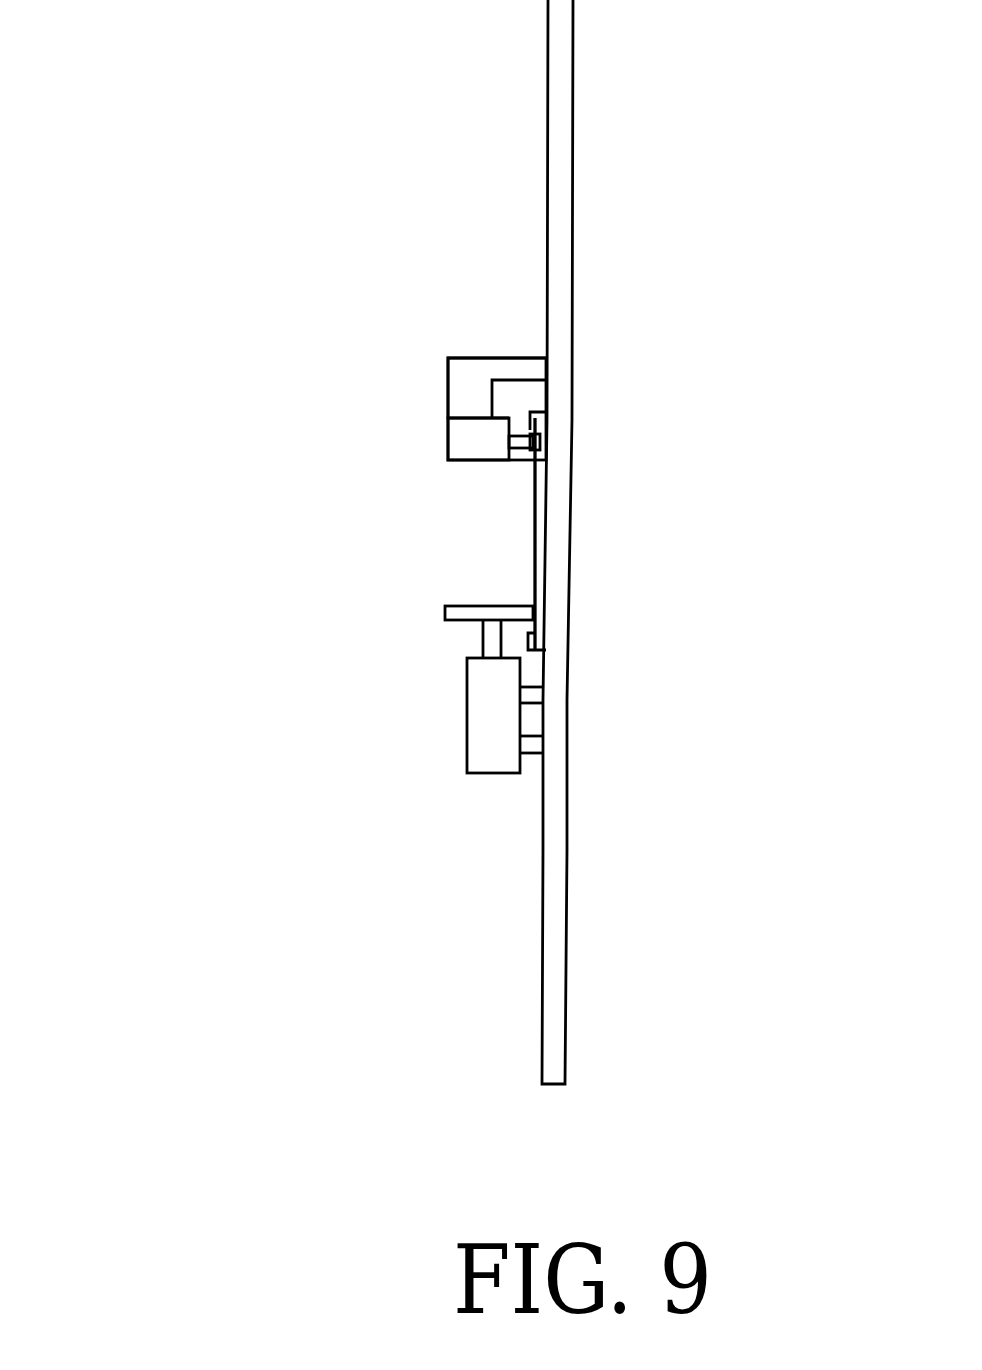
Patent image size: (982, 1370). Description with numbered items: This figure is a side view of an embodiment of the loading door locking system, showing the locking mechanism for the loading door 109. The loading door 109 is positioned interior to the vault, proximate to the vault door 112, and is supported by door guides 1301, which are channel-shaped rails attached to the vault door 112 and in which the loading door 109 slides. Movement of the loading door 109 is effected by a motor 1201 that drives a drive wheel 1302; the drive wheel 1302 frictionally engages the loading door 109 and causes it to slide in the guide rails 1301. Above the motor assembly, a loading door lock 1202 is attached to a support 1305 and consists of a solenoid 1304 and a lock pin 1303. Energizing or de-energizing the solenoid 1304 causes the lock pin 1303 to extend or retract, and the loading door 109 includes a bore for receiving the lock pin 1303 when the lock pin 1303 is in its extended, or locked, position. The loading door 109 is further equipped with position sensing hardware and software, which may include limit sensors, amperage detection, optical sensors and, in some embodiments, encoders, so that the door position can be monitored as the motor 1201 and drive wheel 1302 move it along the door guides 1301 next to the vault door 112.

The loading door 109 is at (540, 507).
The vault door 112 is at (563, 563).
The motor 1201 is at (478, 688).
The loading door lock 1202 is at (447, 402).
The door guides 1301 is at (653, 643).
The drive wheel 1302 is at (442, 613).
The lock pin 1303 is at (524, 455).
The solenoid 1304 is at (447, 443).
The support 1305 is at (457, 345).